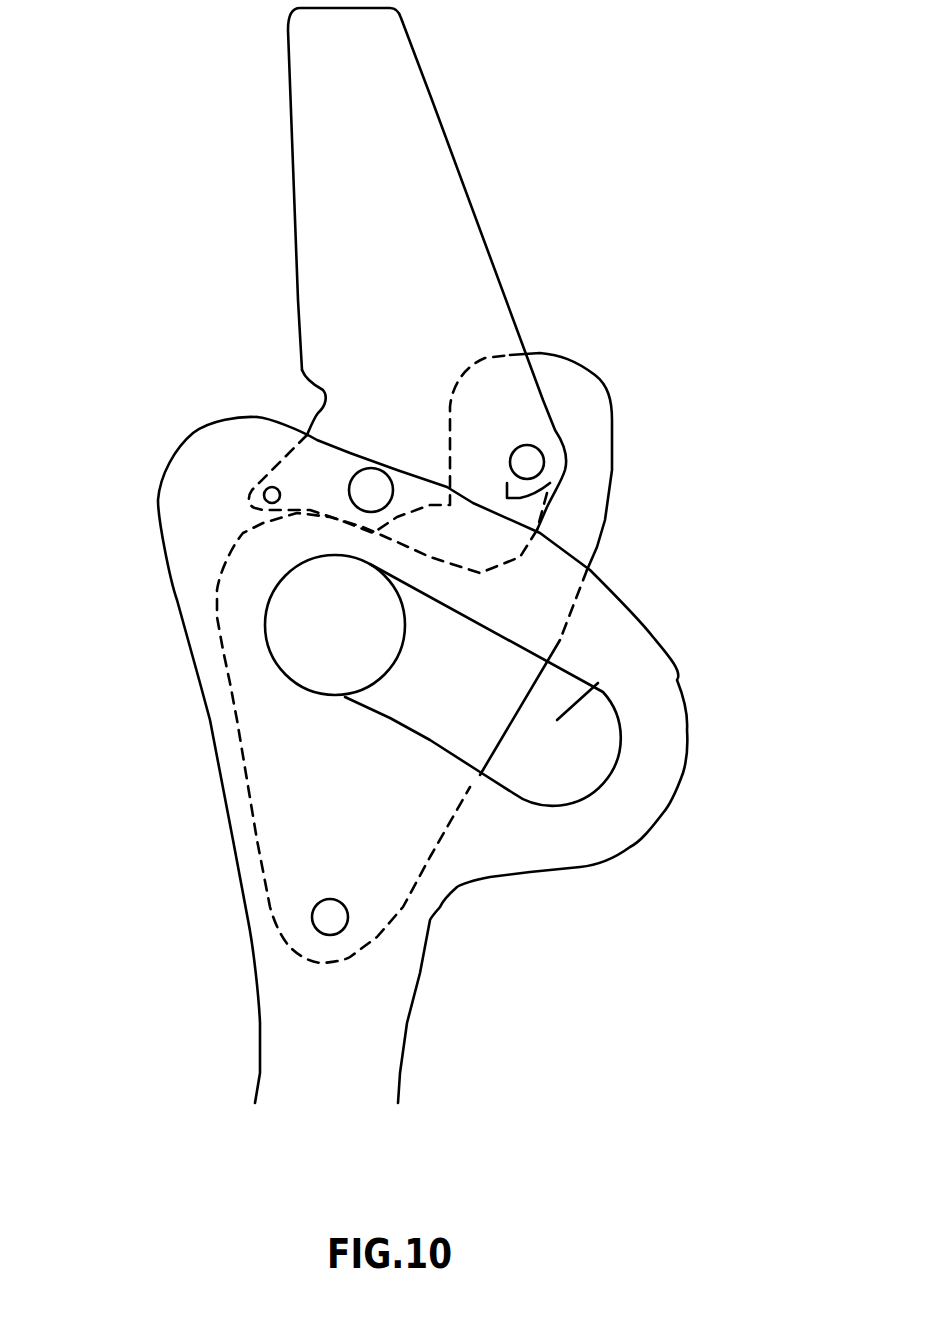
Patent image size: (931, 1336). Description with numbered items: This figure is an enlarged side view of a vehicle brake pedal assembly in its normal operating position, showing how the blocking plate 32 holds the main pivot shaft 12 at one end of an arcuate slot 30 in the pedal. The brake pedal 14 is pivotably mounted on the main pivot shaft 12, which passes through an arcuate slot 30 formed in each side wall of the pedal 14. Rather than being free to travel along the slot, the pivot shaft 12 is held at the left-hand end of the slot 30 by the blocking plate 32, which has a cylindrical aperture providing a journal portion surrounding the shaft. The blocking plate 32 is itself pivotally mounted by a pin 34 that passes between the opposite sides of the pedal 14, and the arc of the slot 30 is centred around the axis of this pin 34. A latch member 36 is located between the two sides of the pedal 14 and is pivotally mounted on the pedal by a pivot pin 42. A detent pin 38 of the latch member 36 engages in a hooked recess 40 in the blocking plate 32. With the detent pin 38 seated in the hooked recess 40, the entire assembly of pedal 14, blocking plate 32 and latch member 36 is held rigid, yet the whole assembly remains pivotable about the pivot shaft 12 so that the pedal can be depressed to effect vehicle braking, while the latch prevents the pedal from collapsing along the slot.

The main pivot shaft 12 is at (335, 625).
The brake pedal 14 is at (363, 1025).
The arcuate slot 30 is at (557, 720).
The blocking plate 32 is at (595, 422).
The pin 34 is at (330, 918).
The latch member 36 is at (435, 180).
The detent pin 38 is at (527, 462).
The hooked recess 40 is at (503, 483).
The pivot pin 42 is at (383, 495).